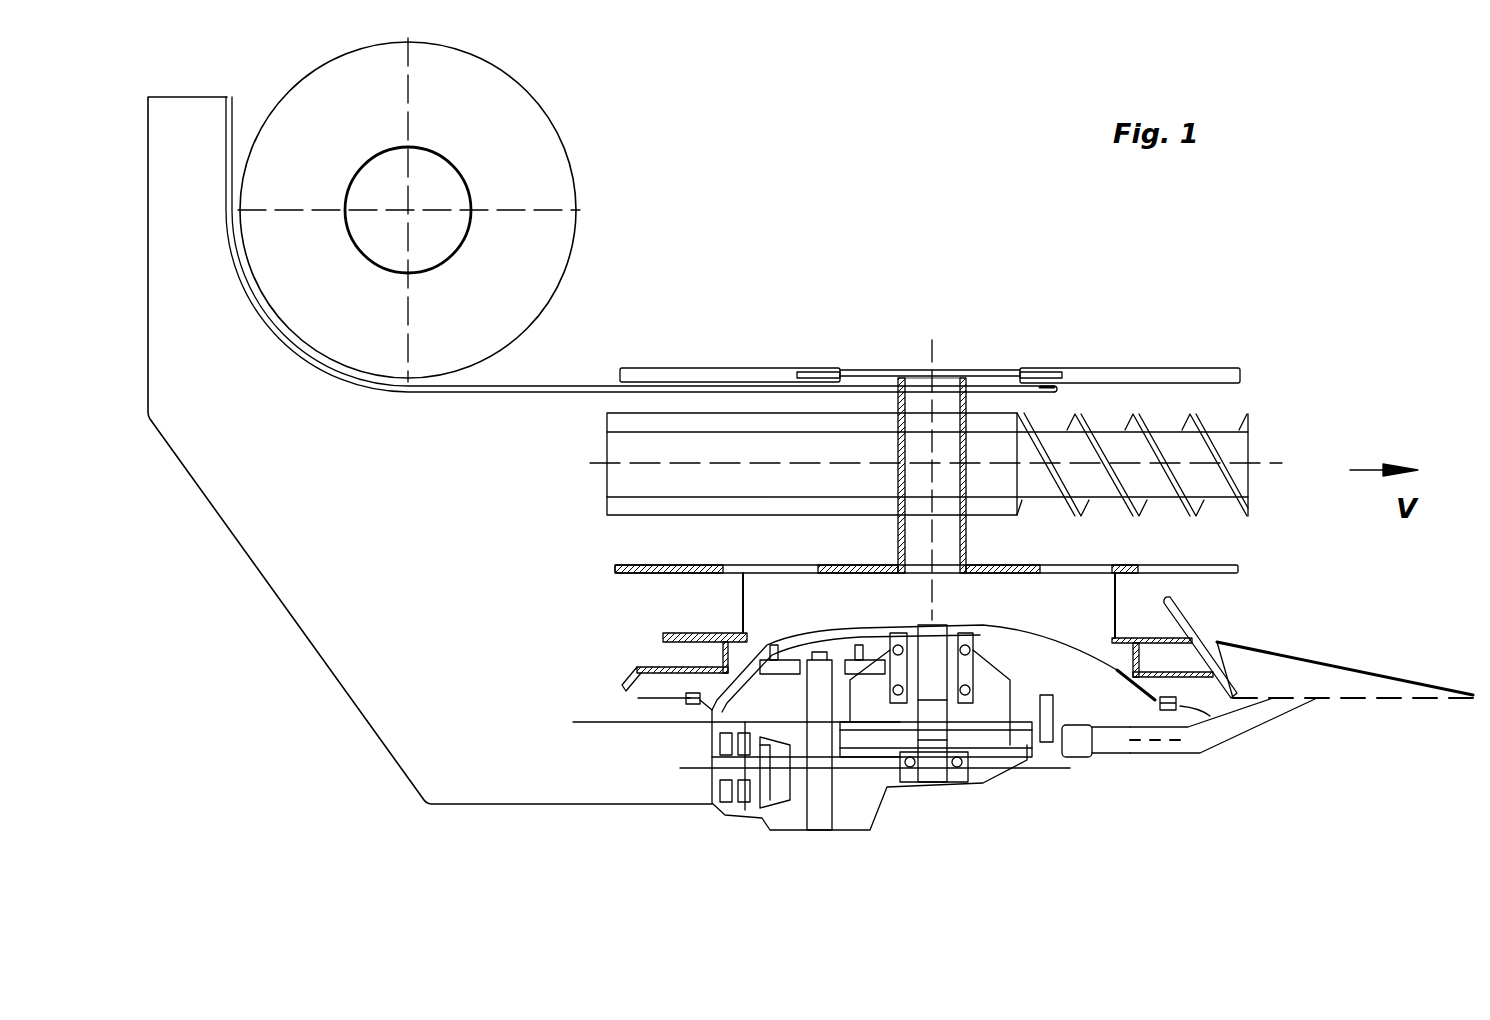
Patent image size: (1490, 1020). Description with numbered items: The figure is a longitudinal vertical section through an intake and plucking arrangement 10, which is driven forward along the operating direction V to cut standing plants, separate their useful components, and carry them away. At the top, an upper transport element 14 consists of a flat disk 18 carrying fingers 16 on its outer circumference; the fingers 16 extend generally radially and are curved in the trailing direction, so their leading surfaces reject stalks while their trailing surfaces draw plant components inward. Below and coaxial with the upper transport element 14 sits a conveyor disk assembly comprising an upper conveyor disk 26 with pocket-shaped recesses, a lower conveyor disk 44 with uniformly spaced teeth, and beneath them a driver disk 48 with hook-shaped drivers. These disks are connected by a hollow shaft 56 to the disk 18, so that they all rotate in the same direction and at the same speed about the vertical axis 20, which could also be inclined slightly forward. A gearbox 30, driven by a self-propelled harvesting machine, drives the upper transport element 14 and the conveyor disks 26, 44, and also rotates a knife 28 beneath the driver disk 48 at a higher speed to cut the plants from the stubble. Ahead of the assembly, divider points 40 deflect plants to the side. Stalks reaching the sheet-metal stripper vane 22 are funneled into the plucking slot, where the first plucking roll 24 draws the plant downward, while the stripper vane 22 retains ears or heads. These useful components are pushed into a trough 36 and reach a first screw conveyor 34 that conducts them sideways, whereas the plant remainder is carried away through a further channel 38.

The intake and plucking arrangement 10 is at (1041, 297).
The upper transport element 14 is at (806, 332).
The fingers 16 is at (702, 375).
The flat disk 18 is at (1000, 372).
The vertical axis 20 is at (938, 347).
The sheet-metal stripper vane 22 is at (1048, 392).
The first plucking roll 24 is at (1236, 445).
The upper conveyor disk 26 is at (1218, 569).
The knife 28 is at (1210, 700).
The gearbox 30 is at (907, 796).
The first screw conveyor 34 is at (548, 233).
The trough 36 is at (470, 377).
The further channel 38 is at (402, 557).
The divider points 40 is at (1353, 684).
The lower conveyor disk 44 is at (1176, 628).
The driver disk 48 is at (637, 668).
The hollow shaft 56 is at (966, 540).